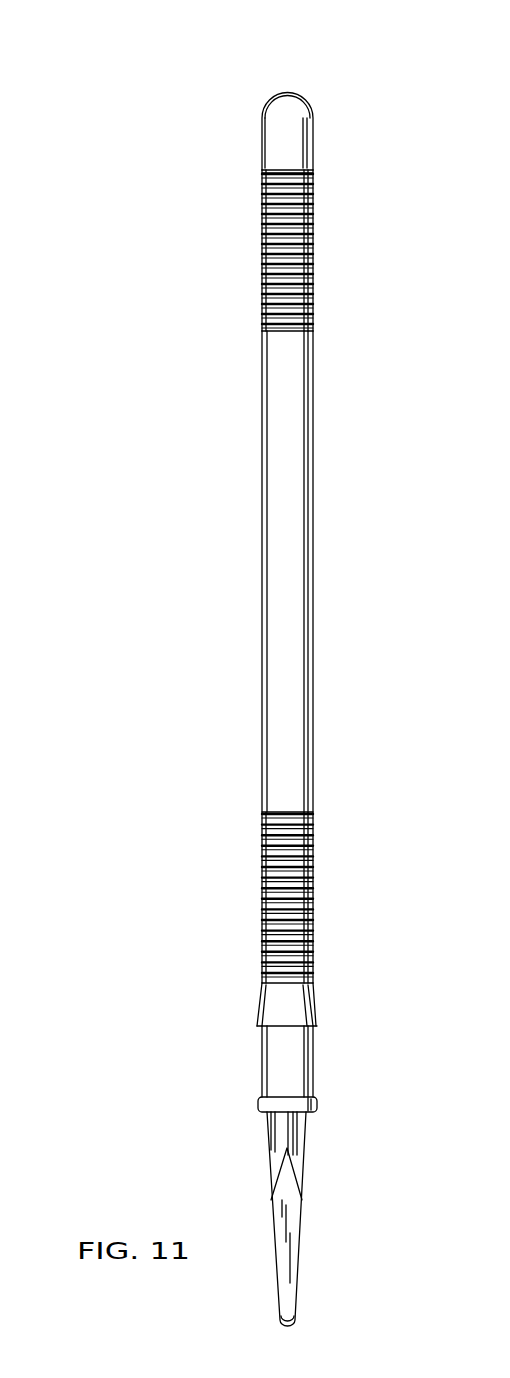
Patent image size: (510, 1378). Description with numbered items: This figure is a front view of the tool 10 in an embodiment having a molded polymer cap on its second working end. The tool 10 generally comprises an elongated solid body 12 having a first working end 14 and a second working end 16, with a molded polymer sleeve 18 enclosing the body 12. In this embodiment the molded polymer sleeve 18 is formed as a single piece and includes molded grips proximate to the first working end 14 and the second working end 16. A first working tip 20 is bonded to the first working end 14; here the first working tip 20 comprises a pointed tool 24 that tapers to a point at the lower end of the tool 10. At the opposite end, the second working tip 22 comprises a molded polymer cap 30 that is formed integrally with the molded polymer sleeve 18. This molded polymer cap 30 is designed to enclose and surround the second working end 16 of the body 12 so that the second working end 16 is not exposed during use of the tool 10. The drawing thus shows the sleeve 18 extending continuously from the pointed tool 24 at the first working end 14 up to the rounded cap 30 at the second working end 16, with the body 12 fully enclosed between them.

The tool 10 is at (98, 384).
The elongated solid body 12 is at (285, 82).
The first working end 14 is at (263, 1058).
The second working end 16 is at (222, 147).
The molded polymer sleeve 18 is at (313, 608).
The first working tip 20 is at (302, 1202).
The second working tip 22 is at (270, 100).
The pointed tool 24 is at (270, 1182).
The molded polymer cap 30 is at (313, 108).